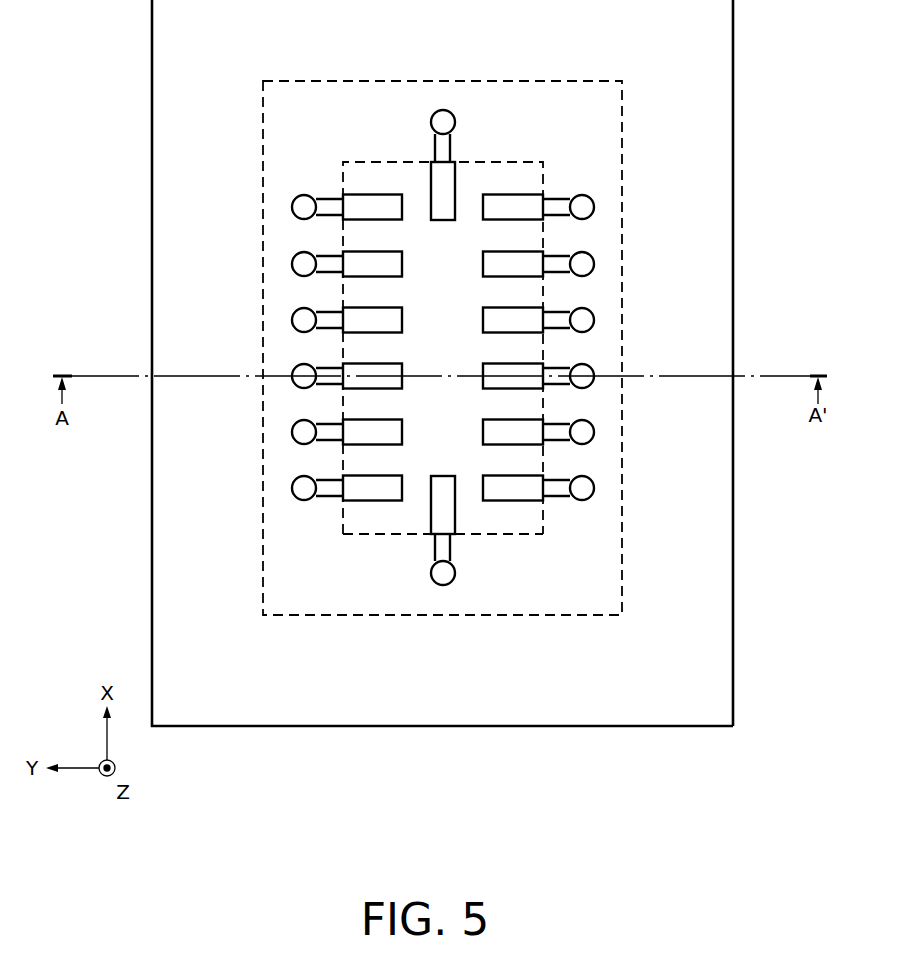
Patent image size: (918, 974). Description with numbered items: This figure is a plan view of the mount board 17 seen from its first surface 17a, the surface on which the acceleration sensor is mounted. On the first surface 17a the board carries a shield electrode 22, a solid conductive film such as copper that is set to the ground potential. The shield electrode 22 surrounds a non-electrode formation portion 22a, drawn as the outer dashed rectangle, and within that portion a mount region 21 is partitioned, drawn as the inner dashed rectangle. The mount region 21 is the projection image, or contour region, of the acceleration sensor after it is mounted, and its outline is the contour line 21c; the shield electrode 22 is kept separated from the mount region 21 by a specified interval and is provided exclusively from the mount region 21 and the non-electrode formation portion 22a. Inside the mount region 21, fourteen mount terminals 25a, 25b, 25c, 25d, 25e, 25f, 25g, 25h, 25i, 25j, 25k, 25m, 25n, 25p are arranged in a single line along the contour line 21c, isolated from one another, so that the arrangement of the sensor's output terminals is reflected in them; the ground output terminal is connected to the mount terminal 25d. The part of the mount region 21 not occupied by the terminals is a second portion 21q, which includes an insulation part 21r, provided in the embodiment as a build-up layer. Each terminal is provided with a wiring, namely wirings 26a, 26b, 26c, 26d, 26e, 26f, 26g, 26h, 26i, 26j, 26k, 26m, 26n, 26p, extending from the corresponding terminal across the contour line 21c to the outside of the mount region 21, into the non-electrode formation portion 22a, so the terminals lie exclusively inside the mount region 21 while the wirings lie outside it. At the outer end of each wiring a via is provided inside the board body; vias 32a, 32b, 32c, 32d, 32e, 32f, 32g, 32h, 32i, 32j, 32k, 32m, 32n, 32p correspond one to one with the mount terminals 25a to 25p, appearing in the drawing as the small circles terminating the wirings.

The mount board 17 is at (481, 402).
The first surface 17a is at (768, 363).
The shield electrode 22 is at (727, 680).
The non-electrode formation portion 22a is at (592, 90).
The mount region 21 is at (449, 390).
The contour line 21c is at (540, 160).
The second portion 21q is at (449, 611).
The insulation part 21r is at (487, 528).
The mount terminal 25a is at (437, 515).
The mount terminal 25b is at (513, 492).
The mount terminal 25c is at (488, 430).
The mount terminal 25d is at (488, 372).
The mount terminal 25e is at (488, 318).
The mount terminal 25f is at (488, 262).
The mount terminal 25g is at (507, 203).
The mount terminal 25h is at (437, 182).
The mount terminal 25i is at (380, 203).
The mount terminal 25j is at (396, 264).
The mount terminal 25k is at (396, 320).
The mount terminal 25m is at (396, 382).
The mount terminal 25n is at (396, 438).
The mount terminal 25p is at (366, 492).
The wiring 26a is at (447, 548).
The wiring 26b is at (561, 496).
The wiring 26c is at (559, 440).
The wiring 26d is at (559, 384).
The wiring 26e is at (559, 312).
The wiring 26f is at (559, 256).
The wiring 26g is at (560, 202).
The wiring 26h is at (448, 148).
The wiring 26i is at (330, 202).
The wiring 26j is at (327, 256).
The wiring 26k is at (327, 312).
The wiring 26m is at (327, 384).
The wiring 26n is at (327, 440).
The wiring 26p is at (326, 496).
The via 32a is at (438, 578).
The via 32b is at (594, 488).
The via 32c is at (594, 432).
The via 32d is at (584, 365).
The via 32e is at (594, 320).
The via 32f is at (594, 264).
The via 32g is at (594, 207).
The via 32h is at (443, 112).
The via 32i is at (292, 207).
The via 32j is at (292, 264).
The via 32k is at (292, 320).
The via 32m is at (303, 366).
The via 32n is at (292, 432).
The via 32p is at (292, 488).